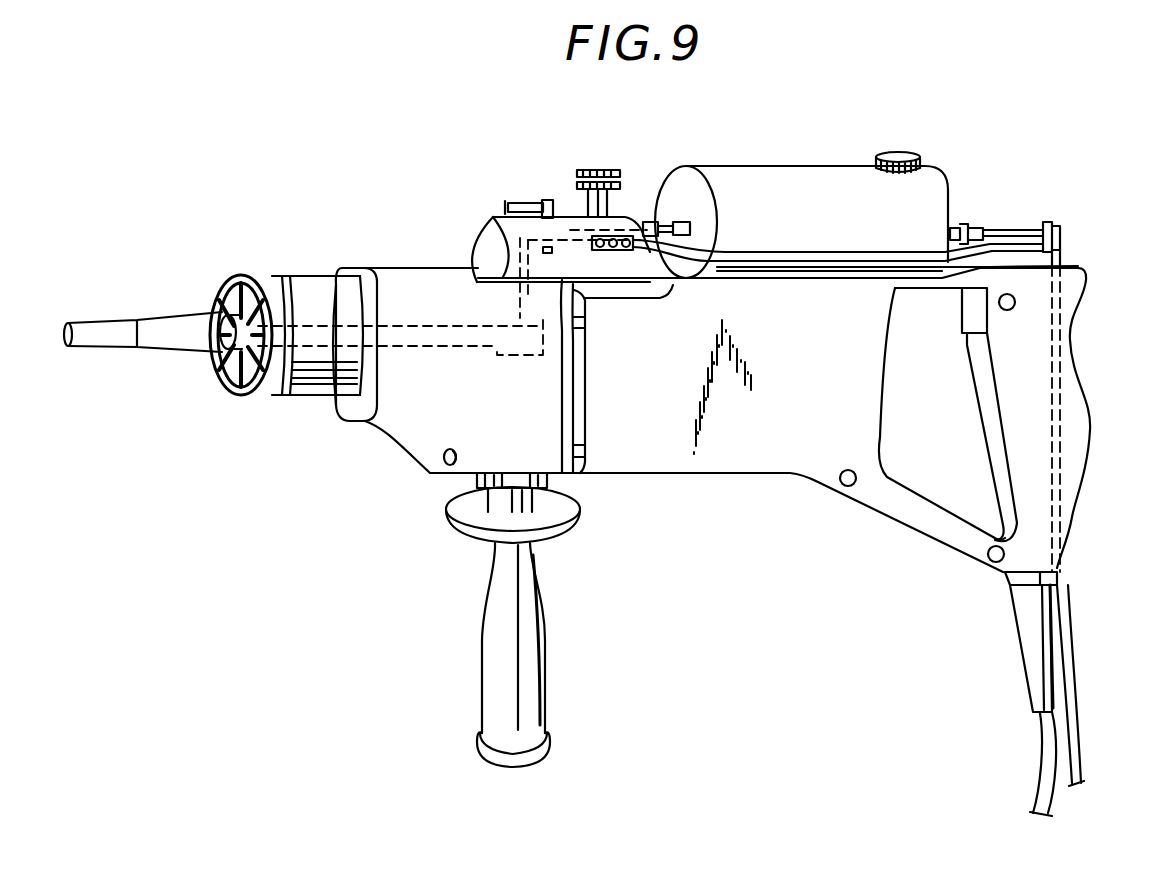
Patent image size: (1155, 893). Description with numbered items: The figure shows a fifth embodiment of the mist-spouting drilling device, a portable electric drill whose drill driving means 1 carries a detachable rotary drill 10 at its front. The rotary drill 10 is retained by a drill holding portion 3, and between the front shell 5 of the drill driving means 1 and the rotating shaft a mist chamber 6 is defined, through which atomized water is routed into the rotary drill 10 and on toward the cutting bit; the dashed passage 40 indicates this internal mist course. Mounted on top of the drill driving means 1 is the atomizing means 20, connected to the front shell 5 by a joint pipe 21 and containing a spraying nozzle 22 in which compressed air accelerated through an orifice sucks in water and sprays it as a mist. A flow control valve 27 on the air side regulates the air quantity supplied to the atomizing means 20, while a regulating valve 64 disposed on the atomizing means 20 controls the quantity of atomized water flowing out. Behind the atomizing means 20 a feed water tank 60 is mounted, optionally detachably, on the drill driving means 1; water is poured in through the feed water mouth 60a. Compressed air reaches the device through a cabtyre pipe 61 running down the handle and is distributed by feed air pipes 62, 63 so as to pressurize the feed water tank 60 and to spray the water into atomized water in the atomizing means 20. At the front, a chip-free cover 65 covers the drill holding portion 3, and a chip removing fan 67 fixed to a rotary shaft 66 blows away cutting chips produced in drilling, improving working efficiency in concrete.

The drill driving means 1 is at (668, 478).
The drill holding portion 3 is at (256, 318).
The front shell 5 is at (256, 356).
The mist chamber 6 is at (505, 318).
The rotary drill 10 is at (84, 352).
The atomizing means 20 is at (579, 191).
The joint pipe 21 is at (492, 236).
The spraying nozzle 22 is at (548, 247).
The flow control valve 27 is at (604, 168).
The internal fluid passage 40 is at (406, 336).
The feed water tank 60 is at (803, 189).
The feed water mouth 60a is at (900, 158).
The cabtyre pipe 61 is at (1073, 703).
The feed air pipe 62 is at (1020, 246).
The feed air pipe 63 is at (1000, 232).
The regulating valve 64 is at (543, 205).
The chip-free cover 65 is at (293, 397).
The rotary shaft 66 is at (218, 318).
The chip removing fan 67 is at (232, 385).